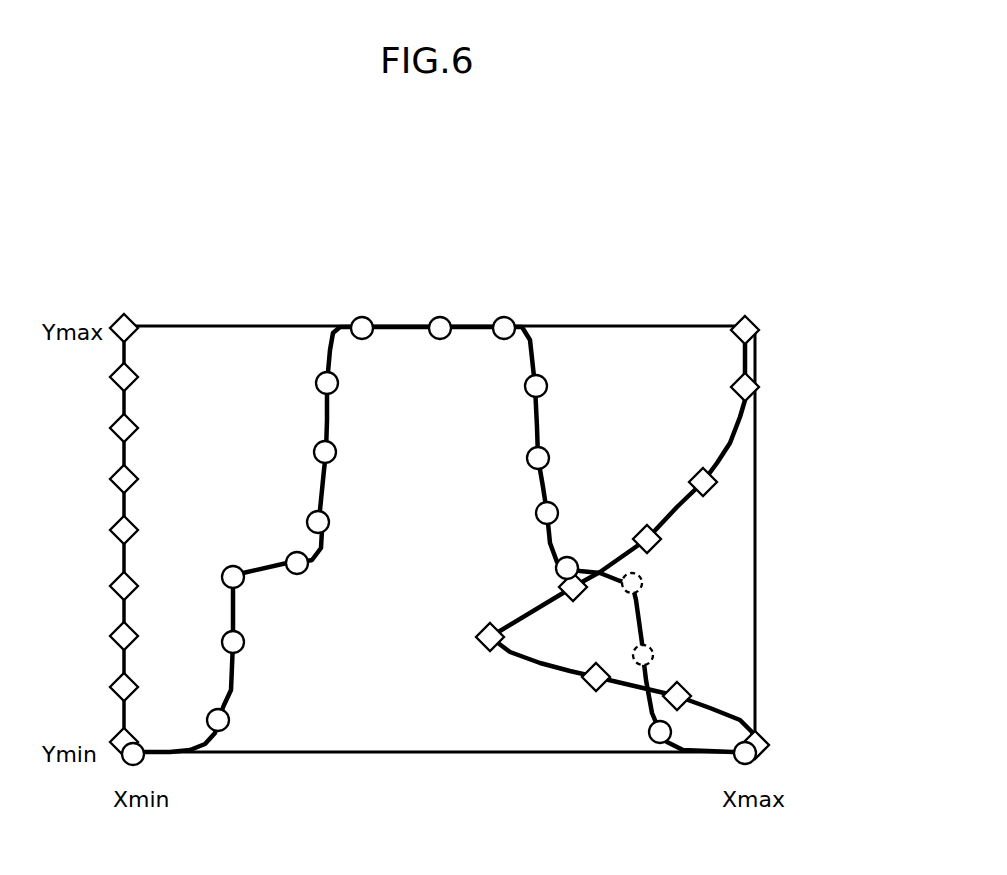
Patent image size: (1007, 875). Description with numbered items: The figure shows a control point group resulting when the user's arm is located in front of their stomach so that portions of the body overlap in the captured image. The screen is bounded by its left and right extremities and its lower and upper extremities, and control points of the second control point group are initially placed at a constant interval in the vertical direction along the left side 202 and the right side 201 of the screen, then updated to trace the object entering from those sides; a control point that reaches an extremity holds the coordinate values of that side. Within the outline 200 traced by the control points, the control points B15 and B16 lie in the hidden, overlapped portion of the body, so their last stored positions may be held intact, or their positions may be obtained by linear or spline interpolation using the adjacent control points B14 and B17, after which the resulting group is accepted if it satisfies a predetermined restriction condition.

The character frame (Ymax boundary line) 200 is at (240, 326).
The right side 201 is at (755, 507).
The left side 202 is at (124, 507).
The control point B14 is at (567, 557).
The control point B15 is at (641, 574).
The control point B16 is at (654, 654).
The control point B17 is at (654, 744).